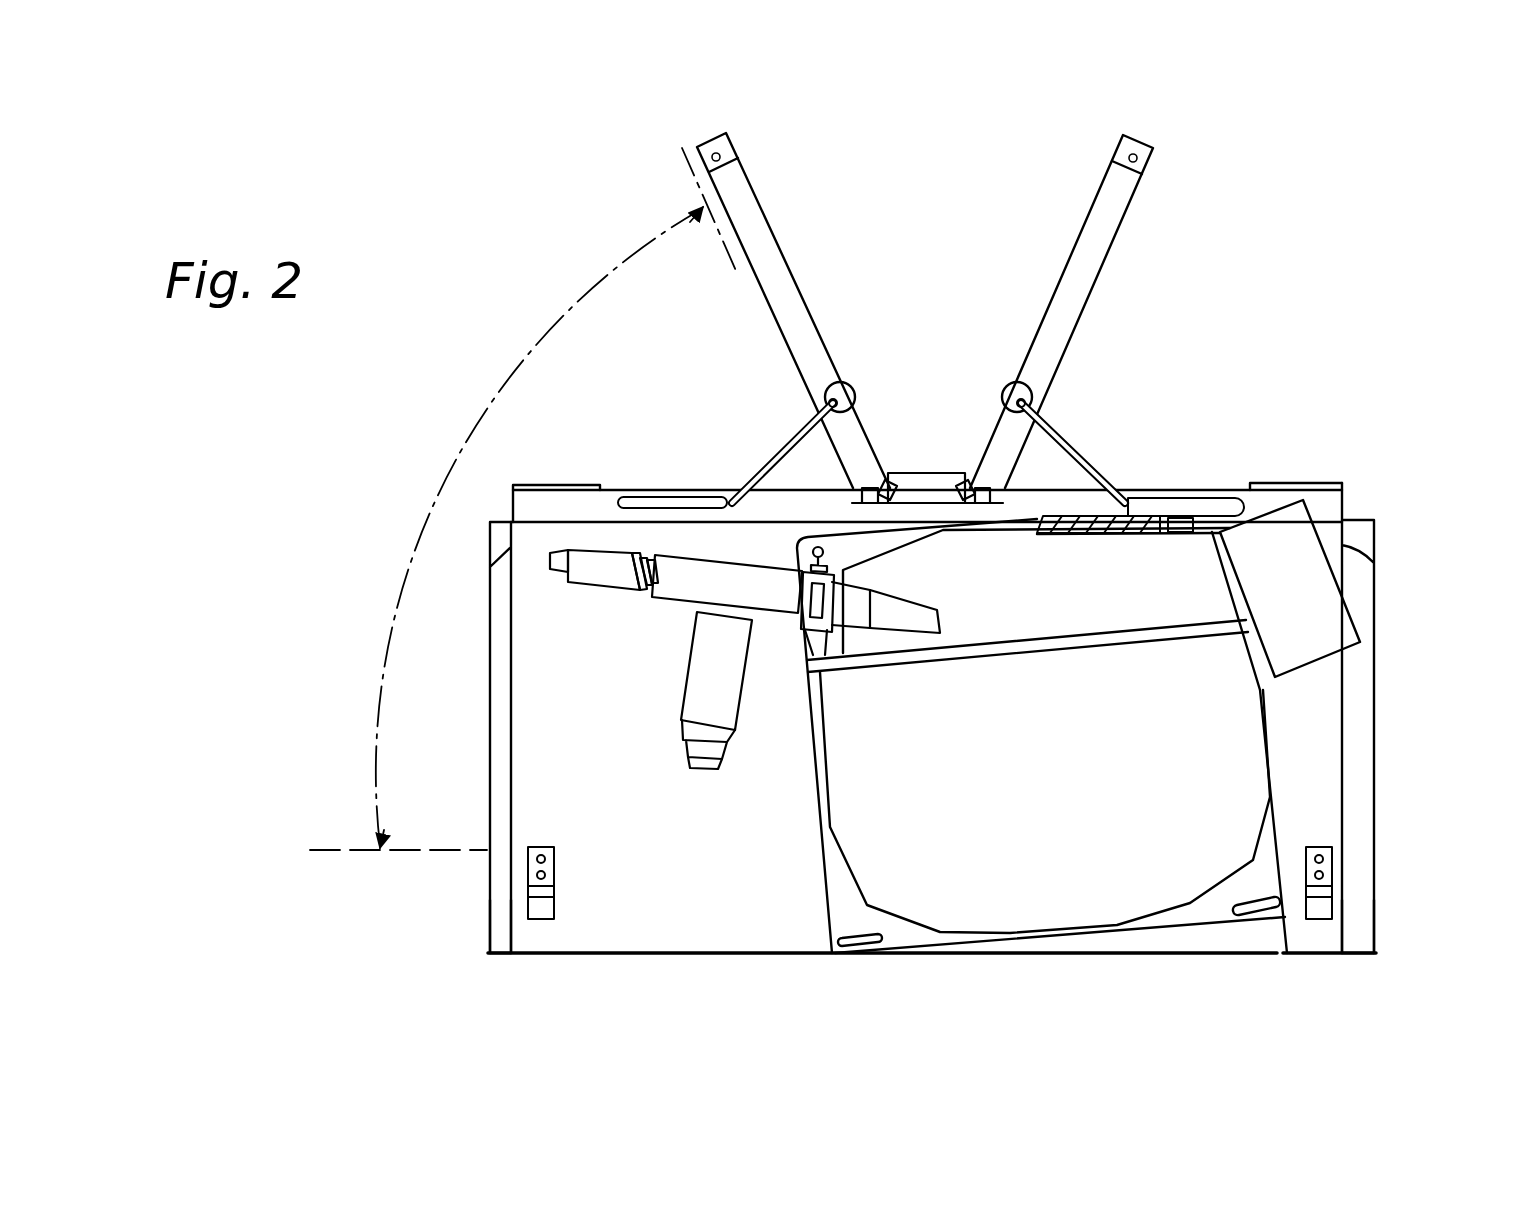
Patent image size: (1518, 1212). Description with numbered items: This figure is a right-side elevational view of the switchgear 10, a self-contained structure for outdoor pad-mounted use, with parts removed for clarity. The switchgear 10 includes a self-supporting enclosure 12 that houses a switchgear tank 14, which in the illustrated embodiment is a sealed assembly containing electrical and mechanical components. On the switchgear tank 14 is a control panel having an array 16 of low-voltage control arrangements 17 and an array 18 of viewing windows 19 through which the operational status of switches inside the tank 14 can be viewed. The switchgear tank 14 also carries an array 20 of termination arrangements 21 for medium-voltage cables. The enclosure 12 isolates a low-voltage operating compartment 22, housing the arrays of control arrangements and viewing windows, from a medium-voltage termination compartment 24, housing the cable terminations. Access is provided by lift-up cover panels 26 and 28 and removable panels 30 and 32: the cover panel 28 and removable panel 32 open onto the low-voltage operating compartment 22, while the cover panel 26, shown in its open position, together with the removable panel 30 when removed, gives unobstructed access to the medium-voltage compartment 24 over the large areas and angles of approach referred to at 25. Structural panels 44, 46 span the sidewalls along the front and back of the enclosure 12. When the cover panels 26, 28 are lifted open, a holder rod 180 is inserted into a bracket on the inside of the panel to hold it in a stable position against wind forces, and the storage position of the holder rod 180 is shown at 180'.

The switchgear 10 is at (409, 398).
The enclosure 12 is at (783, 957).
The switchgear tank 14 is at (815, 800).
The array of low-voltage control arrangements 16 is at (1185, 477).
The low-voltage control arrangements 17 is at (1190, 518).
The array of viewing windows 18 is at (1070, 507).
The viewing windows 19 is at (1139, 527).
The array of termination arrangements 20 is at (606, 546).
The termination arrangements 21 is at (653, 600).
The low-voltage operating compartment 22 is at (1245, 382).
The medium-voltage termination compartment 24 is at (718, 376).
The areas and angles of approach 25 is at (527, 343).
The lift-up cover panel 26 is at (771, 232).
The lift-up cover panel 28 is at (1094, 200).
The removable panel 30 is at (488, 755).
The removable panel 32 is at (1376, 770).
The structural panel 44 is at (488, 912).
The structural panel 46 is at (1376, 918).
The holder rod 180 is at (928, 443).
The storage position of holder rod 180' is at (672, 456).